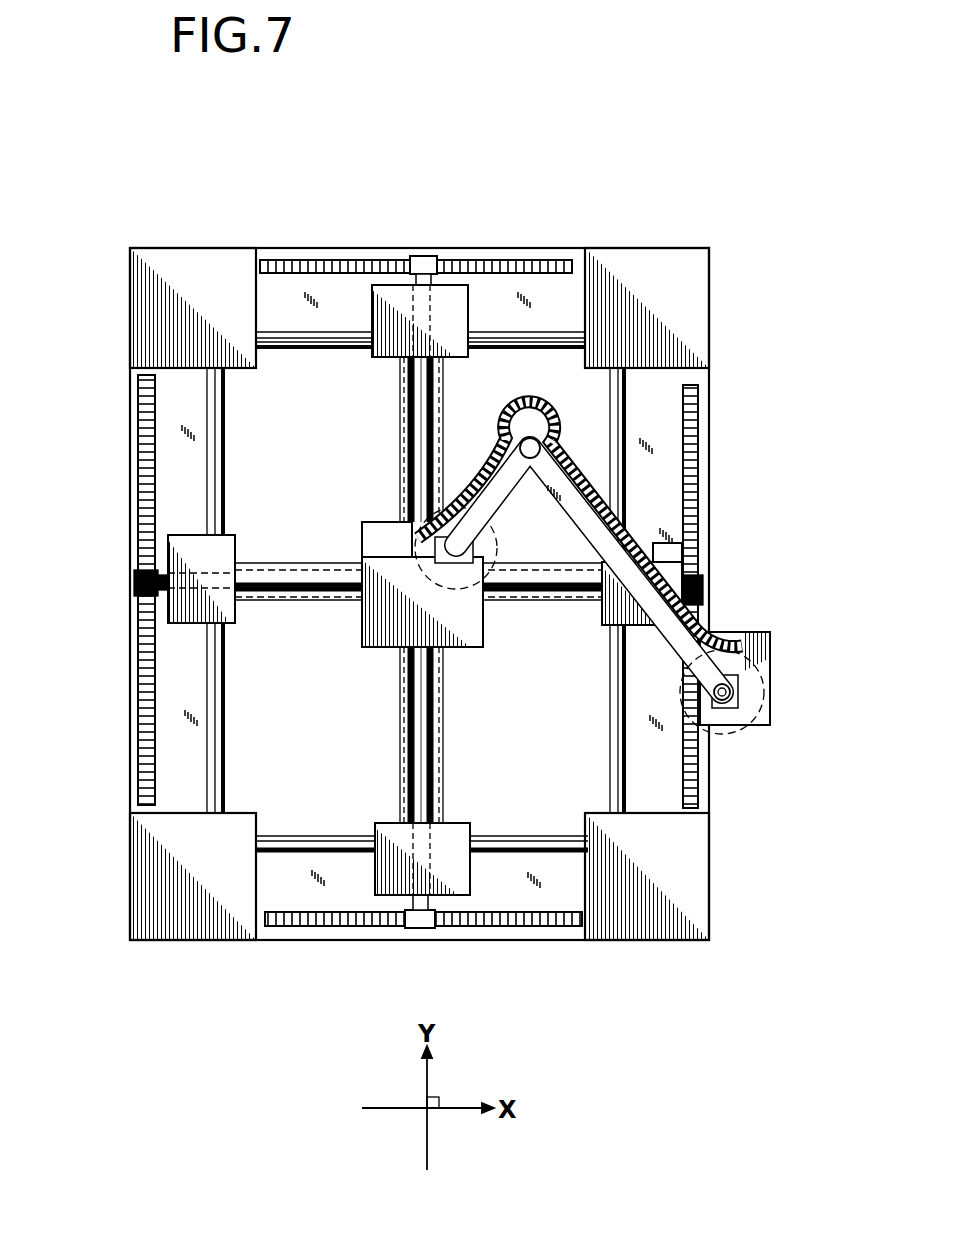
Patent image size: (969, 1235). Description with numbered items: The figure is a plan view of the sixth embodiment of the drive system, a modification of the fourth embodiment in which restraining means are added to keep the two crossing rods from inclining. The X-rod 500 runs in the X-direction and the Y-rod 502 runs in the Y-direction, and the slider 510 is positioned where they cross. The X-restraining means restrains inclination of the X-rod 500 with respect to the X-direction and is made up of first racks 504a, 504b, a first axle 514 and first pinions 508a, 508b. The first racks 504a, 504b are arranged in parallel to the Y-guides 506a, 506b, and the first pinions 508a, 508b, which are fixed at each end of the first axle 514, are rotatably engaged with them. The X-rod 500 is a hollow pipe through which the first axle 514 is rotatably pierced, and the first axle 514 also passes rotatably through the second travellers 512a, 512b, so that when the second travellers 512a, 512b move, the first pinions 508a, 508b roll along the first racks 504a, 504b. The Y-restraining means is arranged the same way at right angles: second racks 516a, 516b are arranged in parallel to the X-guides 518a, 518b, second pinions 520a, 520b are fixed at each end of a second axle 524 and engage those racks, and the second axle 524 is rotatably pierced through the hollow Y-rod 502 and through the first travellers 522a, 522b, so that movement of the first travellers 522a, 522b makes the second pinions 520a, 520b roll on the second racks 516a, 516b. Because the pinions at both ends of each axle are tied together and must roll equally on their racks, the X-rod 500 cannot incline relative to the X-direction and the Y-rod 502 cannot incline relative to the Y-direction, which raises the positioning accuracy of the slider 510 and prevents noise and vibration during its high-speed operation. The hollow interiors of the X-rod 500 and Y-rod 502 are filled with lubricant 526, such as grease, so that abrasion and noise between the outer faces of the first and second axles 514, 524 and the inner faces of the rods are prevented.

The X-rod 500 is at (545, 603).
The Y-rod 502 is at (403, 443).
The slider 510 is at (361, 552).
The first axle 514 is at (348, 582).
The second axle 524 is at (418, 778).
The lubricant 526 is at (442, 731).
The first rack 504a is at (693, 430).
The first rack 504b is at (147, 490).
The Y-guide 506a is at (625, 418).
The Y-guide 506b is at (215, 753).
The first pinion 508a is at (704, 570).
The first pinion 508b is at (138, 580).
The second traveller 512a is at (655, 549).
The second traveller 512b is at (167, 613).
The second rack 516a is at (548, 270).
The second rack 516b is at (297, 925).
The X-guide 518a is at (272, 336).
The X-guide 518b is at (563, 855).
The second pinion 520a is at (428, 258).
The second pinion 520b is at (403, 925).
The first traveller 522a is at (397, 297).
The first traveller 522b is at (478, 875).